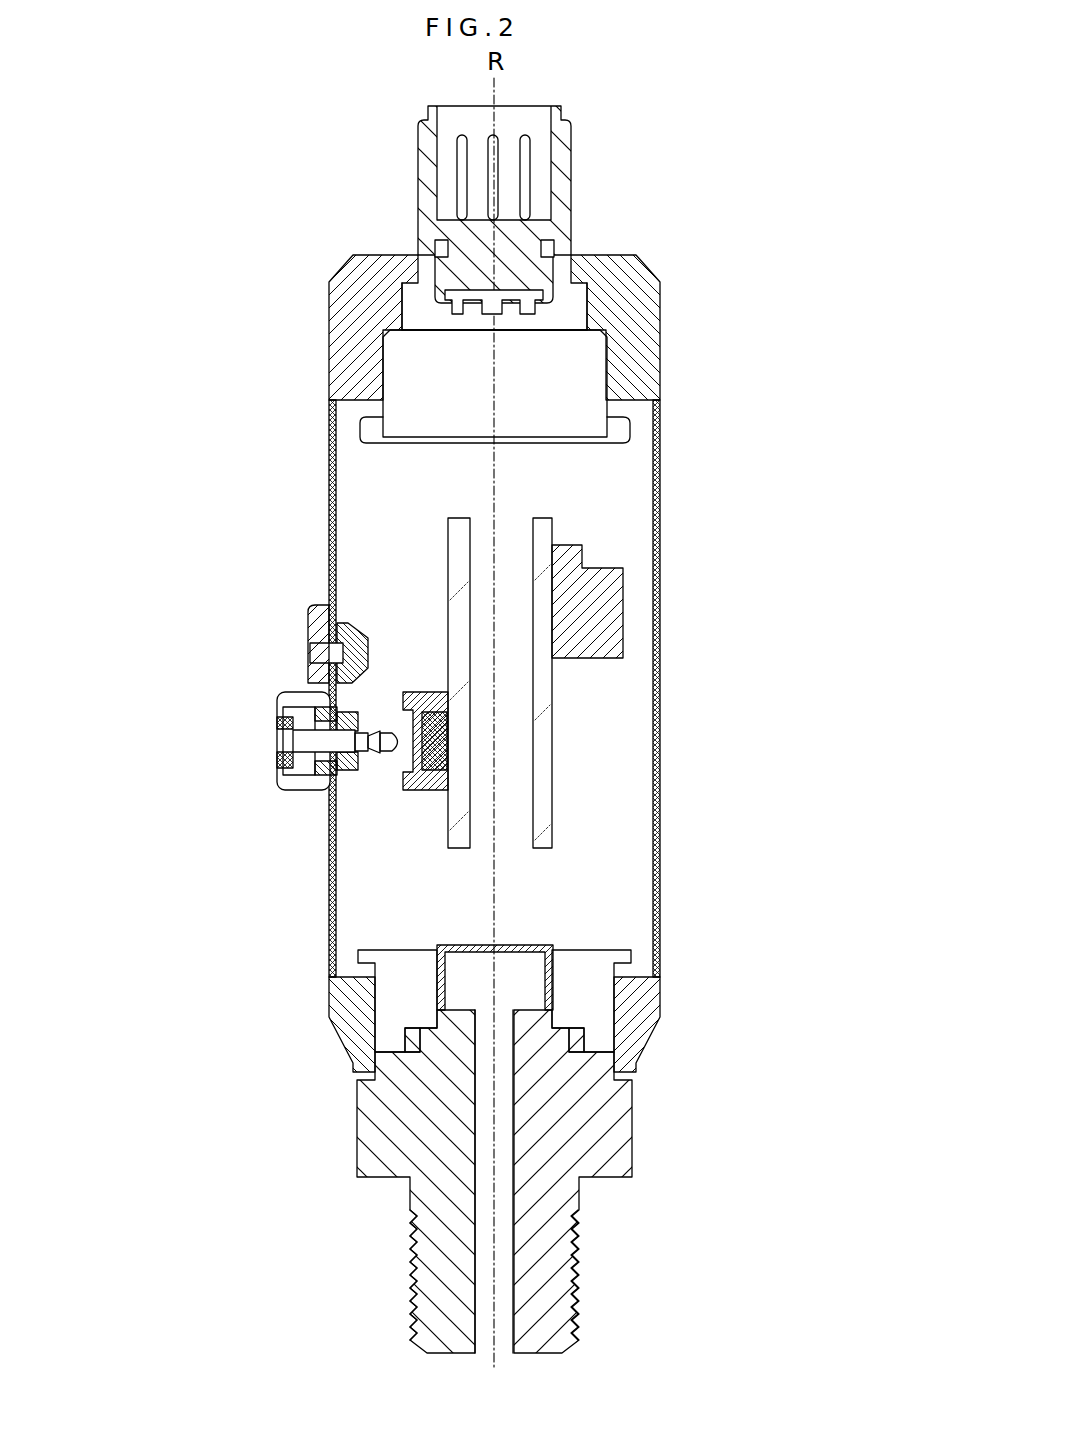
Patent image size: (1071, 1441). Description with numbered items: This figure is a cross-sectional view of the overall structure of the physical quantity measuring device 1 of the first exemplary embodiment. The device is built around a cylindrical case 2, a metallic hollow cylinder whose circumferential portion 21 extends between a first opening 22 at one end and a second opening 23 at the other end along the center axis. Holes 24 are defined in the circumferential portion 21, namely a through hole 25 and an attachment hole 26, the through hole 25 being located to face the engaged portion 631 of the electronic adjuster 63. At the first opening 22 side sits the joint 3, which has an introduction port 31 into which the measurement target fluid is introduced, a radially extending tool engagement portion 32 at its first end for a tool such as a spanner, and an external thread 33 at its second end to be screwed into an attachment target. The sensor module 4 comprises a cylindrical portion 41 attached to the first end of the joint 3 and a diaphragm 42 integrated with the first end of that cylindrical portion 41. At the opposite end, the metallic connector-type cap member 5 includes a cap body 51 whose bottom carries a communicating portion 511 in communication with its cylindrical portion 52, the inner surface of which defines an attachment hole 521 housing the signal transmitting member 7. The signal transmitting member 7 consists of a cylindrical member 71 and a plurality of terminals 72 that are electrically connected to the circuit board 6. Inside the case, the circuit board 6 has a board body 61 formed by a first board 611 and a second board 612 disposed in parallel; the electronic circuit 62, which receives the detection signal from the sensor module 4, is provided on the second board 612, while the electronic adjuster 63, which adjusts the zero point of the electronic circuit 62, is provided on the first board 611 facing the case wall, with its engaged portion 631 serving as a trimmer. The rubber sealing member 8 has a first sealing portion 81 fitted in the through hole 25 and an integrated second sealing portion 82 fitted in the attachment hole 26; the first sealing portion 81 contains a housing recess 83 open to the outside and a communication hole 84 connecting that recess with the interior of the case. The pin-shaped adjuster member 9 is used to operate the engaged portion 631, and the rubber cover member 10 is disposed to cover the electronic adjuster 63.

The physical quantity measuring device 1 is at (809, 160).
The cylindrical case 2 is at (263, 502).
The circumferential portion 21 is at (329, 445).
The first opening 22 is at (597, 1059).
The second opening 23 is at (558, 436).
The holes 24 is at (227, 605).
The through hole 25 is at (312, 708).
The attachment hole 26 is at (320, 638).
The joint 3 is at (741, 1121).
The introduction port 31 is at (509, 1255).
The tool engagement portion 32 is at (633, 1140).
The external thread 33 is at (410, 1268).
The sensor module 4 is at (780, 915).
The cylindrical portion 41 is at (629, 968).
The diaphragm 42 is at (523, 946).
The cap member 5 is at (712, 280).
The cap body 51 is at (607, 347).
The communicating portion 511 is at (563, 296).
The cylindrical portion 52 is at (571, 190).
The attachment hole 521 is at (552, 150).
The circuit board 6 is at (592, 678).
The board body 61 is at (760, 697).
The first board 611 is at (465, 672).
The second board 612 is at (543, 683).
The electronic circuit 62 is at (623, 605).
The electronic adjuster 63 is at (446, 765).
The engaged portion 631 is at (446, 738).
The signal transmitting member 7 is at (584, 92).
The cylindrical member 71 is at (544, 112).
The terminals 72 is at (466, 130).
The sealing member 8 is at (177, 673).
The first sealing portion 81 is at (277, 698).
The second sealing portion 82 is at (317, 608).
The housing recess 83 is at (283, 762).
The communication hole 84 is at (320, 750).
The adjuster member 9 is at (239, 742).
The cover member 10 is at (385, 791).